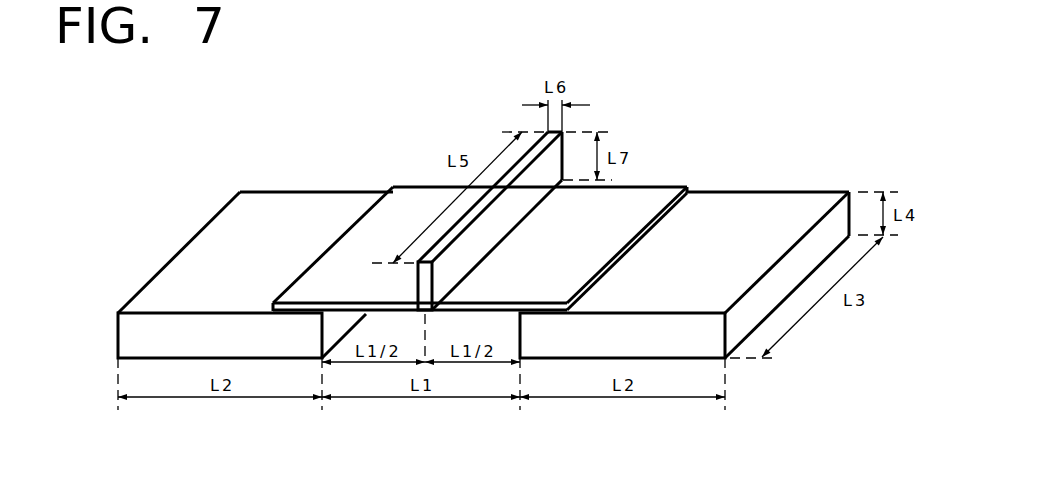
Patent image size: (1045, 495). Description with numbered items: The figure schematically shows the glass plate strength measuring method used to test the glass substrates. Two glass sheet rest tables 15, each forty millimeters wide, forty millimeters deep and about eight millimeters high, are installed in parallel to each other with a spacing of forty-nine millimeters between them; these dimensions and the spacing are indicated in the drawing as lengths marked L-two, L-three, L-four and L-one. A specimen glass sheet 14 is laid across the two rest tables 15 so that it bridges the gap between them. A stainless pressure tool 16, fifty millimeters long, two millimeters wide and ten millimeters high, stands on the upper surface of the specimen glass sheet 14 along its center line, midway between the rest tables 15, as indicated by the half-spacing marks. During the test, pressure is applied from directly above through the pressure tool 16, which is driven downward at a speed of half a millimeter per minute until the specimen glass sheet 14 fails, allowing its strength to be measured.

The specimen glass sheet 14 is at (378, 229).
The glass sheet rest tables 15 is at (246, 228).
The stainless pressure tool 16 is at (496, 232).